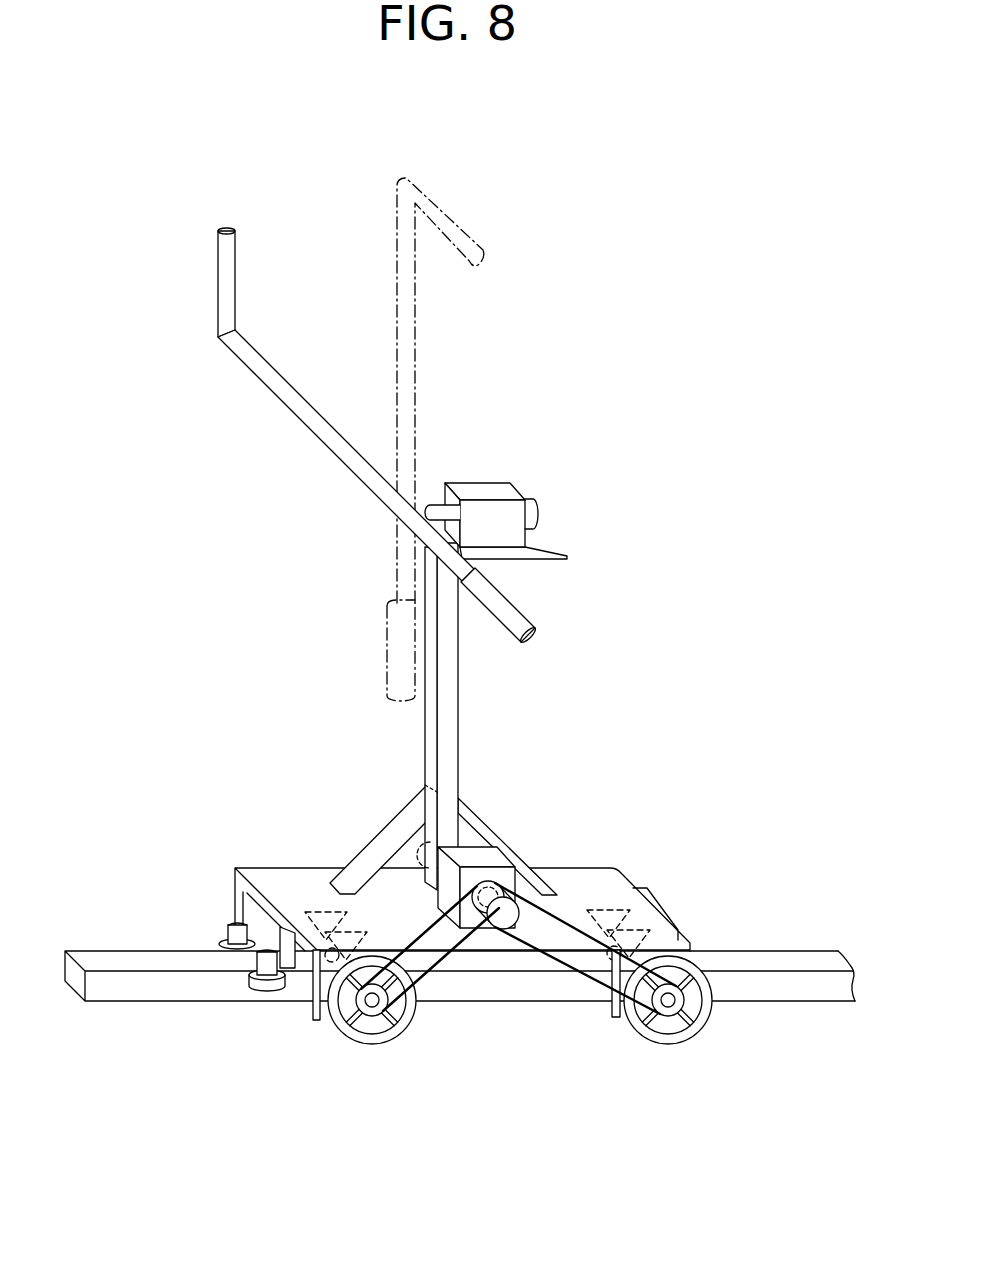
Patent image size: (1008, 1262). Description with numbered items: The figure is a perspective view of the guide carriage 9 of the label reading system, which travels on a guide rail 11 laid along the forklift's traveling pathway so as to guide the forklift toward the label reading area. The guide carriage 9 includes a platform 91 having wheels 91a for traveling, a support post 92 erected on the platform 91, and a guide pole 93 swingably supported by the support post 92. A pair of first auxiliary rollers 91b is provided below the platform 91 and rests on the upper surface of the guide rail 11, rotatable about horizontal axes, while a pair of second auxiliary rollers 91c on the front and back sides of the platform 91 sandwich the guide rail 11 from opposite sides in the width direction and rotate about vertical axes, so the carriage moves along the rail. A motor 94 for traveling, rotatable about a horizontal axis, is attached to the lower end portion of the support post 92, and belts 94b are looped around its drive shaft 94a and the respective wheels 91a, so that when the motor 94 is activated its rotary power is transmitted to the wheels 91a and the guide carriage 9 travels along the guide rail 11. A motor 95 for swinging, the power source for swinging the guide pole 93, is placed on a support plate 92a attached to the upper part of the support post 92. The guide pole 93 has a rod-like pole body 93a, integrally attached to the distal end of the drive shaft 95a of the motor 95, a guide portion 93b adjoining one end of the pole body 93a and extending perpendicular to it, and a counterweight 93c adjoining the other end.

The guide carriage 9 is at (597, 437).
The guide rail 11 is at (762, 950).
The platform 91 is at (287, 866).
The wheels 91a is at (372, 1046).
The first auxiliary rollers 91b is at (315, 980).
The second auxiliary rollers 91c is at (232, 924).
The support post 92 is at (469, 717).
The support plate 92a is at (548, 560).
The guide pole 93 is at (395, 277).
The pole body 93a is at (306, 400).
The guide portion 93b is at (219, 276).
The counterweight 93c is at (534, 632).
The motor for traveling 94 is at (470, 855).
The drive shaft 94a is at (508, 910).
The belts 94b is at (574, 928).
The motor for swinging 95 is at (490, 483).
The drive shaft 95a is at (437, 503).